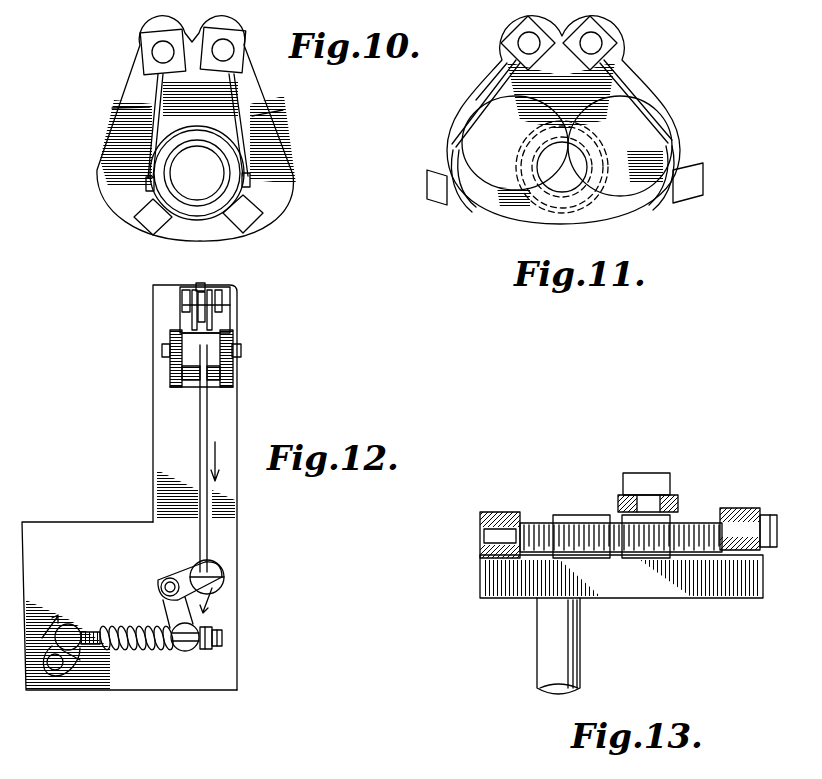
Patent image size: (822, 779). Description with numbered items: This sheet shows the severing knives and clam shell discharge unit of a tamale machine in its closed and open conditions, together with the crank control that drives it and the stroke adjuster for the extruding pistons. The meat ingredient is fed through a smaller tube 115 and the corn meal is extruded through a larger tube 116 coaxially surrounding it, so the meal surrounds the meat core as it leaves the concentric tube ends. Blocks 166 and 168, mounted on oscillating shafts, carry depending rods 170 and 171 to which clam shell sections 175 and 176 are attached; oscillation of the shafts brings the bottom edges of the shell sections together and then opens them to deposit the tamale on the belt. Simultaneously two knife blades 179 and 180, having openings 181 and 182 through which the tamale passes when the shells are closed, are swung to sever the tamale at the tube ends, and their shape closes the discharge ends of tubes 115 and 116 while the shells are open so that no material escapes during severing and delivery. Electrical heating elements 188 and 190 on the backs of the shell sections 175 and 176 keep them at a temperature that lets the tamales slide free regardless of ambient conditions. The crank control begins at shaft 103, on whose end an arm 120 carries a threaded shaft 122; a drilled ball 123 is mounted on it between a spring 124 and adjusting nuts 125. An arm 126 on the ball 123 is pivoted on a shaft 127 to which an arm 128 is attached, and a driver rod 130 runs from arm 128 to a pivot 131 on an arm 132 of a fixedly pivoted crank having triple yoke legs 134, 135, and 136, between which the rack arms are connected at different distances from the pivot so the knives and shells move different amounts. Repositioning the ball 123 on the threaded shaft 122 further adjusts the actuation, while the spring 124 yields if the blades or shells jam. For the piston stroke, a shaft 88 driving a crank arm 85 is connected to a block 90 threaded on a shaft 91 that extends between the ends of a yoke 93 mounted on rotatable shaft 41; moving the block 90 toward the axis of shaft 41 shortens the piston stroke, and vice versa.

In FIG. 10, the block 166 is at (150, 38).
In FIG. 11, the block 166 is at (517, 33).
In FIG. 10, the block 168 is at (230, 33).
In FIG. 11, the block 168 is at (594, 26).
In FIG. 10, the tube 116 is at (223, 152).
In FIG. 11, the tube 116 is at (545, 182).
In FIG. 10, the tube 115 is at (192, 201).
In FIG. 11, the tube 115 is at (580, 198).
In FIG. 10, the depending rod 170 is at (150, 125).
In FIG. 11, the depending rod 170 is at (503, 78).
In FIG. 10, the depending rod 171 is at (232, 108).
In FIG. 11, the depending rod 171 is at (623, 82).
In FIG. 10, the knife blade 179 is at (120, 107).
In FIG. 11, the knife blade 179 is at (569, 152).
In FIG. 10, the knife blade 180 is at (293, 122).
In FIG. 10, the clam shell section 175 is at (147, 190).
In FIG. 11, the clam shell section 175 is at (470, 211).
In FIG. 10, the clam shell section 176 is at (243, 188).
In FIG. 11, the clam shell section 176 is at (663, 201).
In FIG. 10, the electrical heating element 188 is at (153, 235).
In FIG. 11, the electrical heating element 188 is at (437, 197).
In FIG. 10, the electrical heating element 190 is at (247, 235).
In FIG. 11, the electrical heating element 190 is at (687, 184).
In FIG. 11, the opening 181 is at (477, 167).
In FIG. 11, the opening 182 is at (657, 157).
In FIG. 12, the driver rod 130 is at (203, 423).
In FIG. 12, the pivotal connection 131 is at (239, 348).
In FIG. 12, the arm 132 is at (213, 365).
In FIG. 12, the yoke leg 134 is at (217, 300).
In FIG. 12, the yoke leg 135 is at (200, 288).
In FIG. 12, the yoke leg 136 is at (193, 310).
In FIG. 12, the arm 128 is at (180, 568).
In FIG. 12, the shaft 127 is at (160, 583).
In FIG. 12, the arm 126 is at (163, 608).
In FIG. 12, the spring 124 is at (143, 652).
In FIG. 12, the drilled ball 123 is at (185, 652).
In FIG. 12, the adjusting nuts 125 is at (213, 653).
In FIG. 12, the threaded shaft 122 is at (90, 627).
In FIG. 12, the shaft 103 is at (58, 673).
In FIG. 12, the arm 120 is at (76, 658).
In FIG. 13, the yoke 93 is at (683, 588).
In FIG. 13, the shaft 91 is at (700, 520).
In FIG. 13, the block 90 is at (657, 550).
In FIG. 13, the crank arm 85 is at (677, 500).
In FIG. 13, the shaft 88 is at (645, 498).
In FIG. 13, the rotatable shaft 41 is at (560, 643).